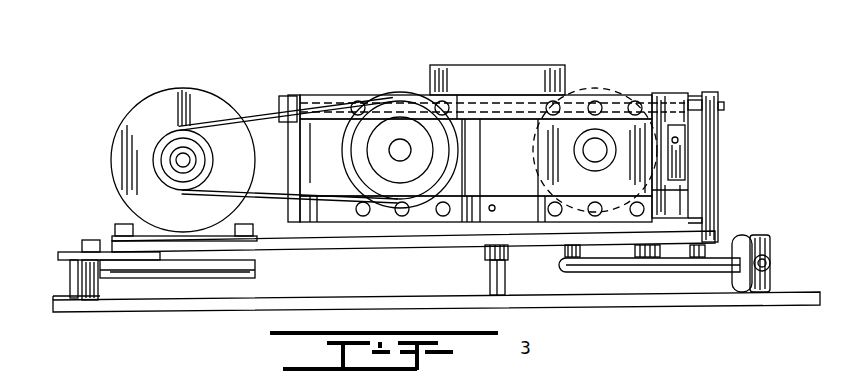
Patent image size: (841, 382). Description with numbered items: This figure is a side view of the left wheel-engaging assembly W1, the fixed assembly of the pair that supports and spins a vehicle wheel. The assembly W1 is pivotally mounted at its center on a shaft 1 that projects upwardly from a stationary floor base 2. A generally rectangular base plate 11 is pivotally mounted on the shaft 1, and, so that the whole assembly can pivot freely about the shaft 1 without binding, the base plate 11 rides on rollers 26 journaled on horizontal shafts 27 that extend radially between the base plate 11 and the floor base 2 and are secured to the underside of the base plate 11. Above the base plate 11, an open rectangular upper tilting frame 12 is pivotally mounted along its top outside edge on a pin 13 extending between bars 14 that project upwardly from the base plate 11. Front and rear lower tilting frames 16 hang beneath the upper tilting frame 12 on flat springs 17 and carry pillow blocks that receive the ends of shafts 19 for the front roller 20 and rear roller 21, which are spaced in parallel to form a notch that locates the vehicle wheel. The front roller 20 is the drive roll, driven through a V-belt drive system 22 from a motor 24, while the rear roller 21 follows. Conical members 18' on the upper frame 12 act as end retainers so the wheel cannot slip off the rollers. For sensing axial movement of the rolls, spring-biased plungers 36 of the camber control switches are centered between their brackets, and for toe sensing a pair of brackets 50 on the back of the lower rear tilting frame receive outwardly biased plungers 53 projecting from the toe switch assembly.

The shaft 1 is at (487, 268).
The stationary floor base 2 is at (698, 306).
The base plate 11 is at (383, 247).
The upper tilting frame 12 is at (656, 95).
The pin 13 is at (308, 100).
The bars 14 is at (289, 96).
The lower tilting frames 16 is at (325, 216).
The flat springs 17 is at (458, 192).
The conical members 18' is at (497, 58).
The shafts 19 is at (405, 145).
The front roller 20 is at (385, 92).
The rear roller 21 is at (578, 91).
The V-belt drive system 22 is at (243, 122).
The motor 24 is at (128, 113).
The rollers 26 is at (768, 277).
The horizontal shafts 27 is at (760, 258).
The spring-biased plungers 36 is at (494, 211).
The brackets 50 is at (684, 195).
The plungers 53 is at (683, 136).
The left wheel-engaging assembly W1 is at (684, 86).